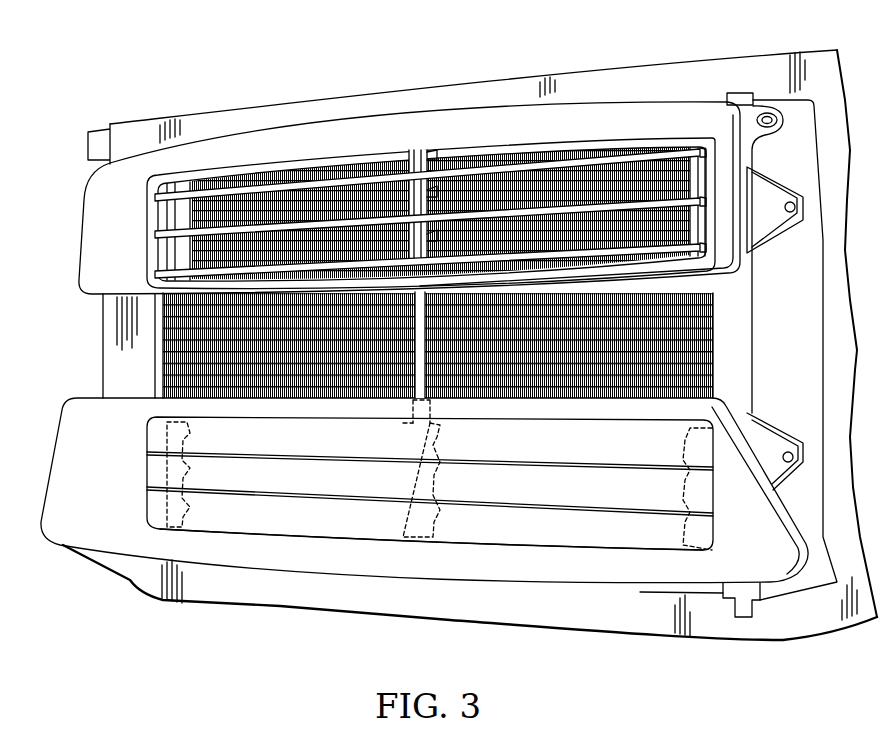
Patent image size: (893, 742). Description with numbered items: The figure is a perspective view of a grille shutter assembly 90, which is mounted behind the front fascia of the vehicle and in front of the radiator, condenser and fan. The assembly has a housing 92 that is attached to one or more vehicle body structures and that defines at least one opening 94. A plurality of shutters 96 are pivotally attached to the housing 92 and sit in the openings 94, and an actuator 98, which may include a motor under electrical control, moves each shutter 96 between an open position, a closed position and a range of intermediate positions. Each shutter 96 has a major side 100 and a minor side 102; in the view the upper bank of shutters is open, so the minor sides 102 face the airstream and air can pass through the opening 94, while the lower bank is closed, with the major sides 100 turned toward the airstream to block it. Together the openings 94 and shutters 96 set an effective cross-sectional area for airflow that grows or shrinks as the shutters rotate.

The grille shutter assembly 90 is at (388, 70).
The housing 92 is at (695, 80).
The opening 94 is at (300, 202).
The shutter 96 is at (233, 494).
The actuator 98 is at (418, 350).
The major side 100 is at (157, 237).
The minor side 102 is at (337, 515).